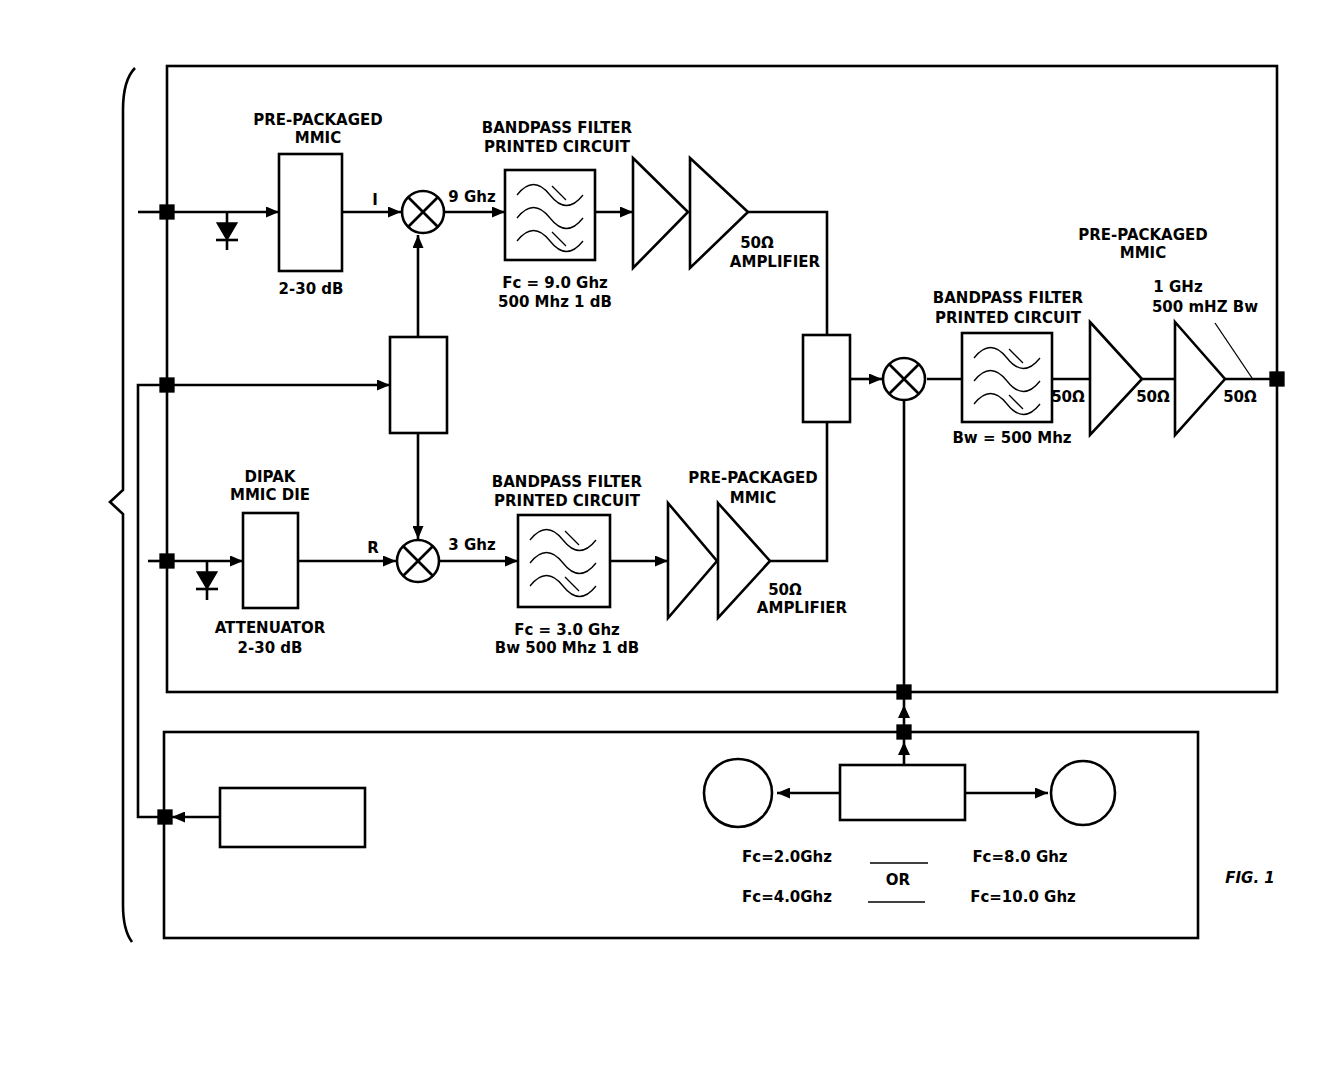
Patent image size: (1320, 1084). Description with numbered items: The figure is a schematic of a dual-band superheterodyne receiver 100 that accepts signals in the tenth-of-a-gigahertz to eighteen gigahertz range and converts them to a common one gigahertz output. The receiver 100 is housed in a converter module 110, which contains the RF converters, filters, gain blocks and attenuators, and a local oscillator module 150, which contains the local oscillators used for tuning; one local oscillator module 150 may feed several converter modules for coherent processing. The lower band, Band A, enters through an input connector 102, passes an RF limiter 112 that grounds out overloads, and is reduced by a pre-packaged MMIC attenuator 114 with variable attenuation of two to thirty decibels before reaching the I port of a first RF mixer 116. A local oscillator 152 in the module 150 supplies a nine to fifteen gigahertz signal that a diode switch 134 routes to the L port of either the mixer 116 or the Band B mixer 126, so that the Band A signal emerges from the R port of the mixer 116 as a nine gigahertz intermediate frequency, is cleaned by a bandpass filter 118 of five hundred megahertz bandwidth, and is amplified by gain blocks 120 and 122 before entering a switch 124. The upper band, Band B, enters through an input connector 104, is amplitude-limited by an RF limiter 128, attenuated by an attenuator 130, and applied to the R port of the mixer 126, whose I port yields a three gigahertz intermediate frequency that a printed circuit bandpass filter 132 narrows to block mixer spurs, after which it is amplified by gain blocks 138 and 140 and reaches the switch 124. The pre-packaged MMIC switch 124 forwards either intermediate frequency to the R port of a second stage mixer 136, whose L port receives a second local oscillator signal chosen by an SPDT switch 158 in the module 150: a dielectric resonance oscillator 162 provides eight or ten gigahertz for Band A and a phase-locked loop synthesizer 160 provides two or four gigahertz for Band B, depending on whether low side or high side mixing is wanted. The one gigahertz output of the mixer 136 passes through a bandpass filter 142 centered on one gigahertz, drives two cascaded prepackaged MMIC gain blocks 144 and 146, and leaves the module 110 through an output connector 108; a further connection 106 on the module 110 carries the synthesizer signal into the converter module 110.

The superheterodyne receiver 100 is at (105, 505).
The input connector 102 is at (192, 184).
The input connector 104 is at (183, 540).
The local oscillator input node 106 is at (200, 368).
The output connector 108 is at (1293, 357).
The converter module 110 is at (722, 379).
The RF limiter 112 is at (214, 257).
The attenuator 114 is at (337, 208).
The first RF mixer 116 is at (426, 189).
The bandpass filter 118 is at (514, 230).
The gain block 120 is at (666, 191).
The gain block 122 is at (743, 210).
The switch 124 is at (806, 378).
The RF mixer 126 is at (406, 588).
The RF limiter 128 is at (194, 621).
The attenuator 130 is at (298, 560).
The printed circuit bandpass filter 132 is at (534, 566).
The diode switch 134 is at (449, 385).
The second stage mixer 136 is at (890, 345).
The amplifier 138 is at (692, 584).
The 50 ohm amplifier 140 is at (749, 584).
The bandpass filter 142 is at (984, 410).
The prepackaged MMIC gain block 144 is at (1119, 399).
The prepackaged MMIC gain block 146 is at (1209, 391).
The local oscillator module 150 is at (681, 835).
The local oscillator 152 is at (327, 815).
The switch 158 is at (932, 782).
The phase-locked loop synthesizer 160 is at (708, 800).
The dielectric resonance oscillator 162 is at (1100, 807).